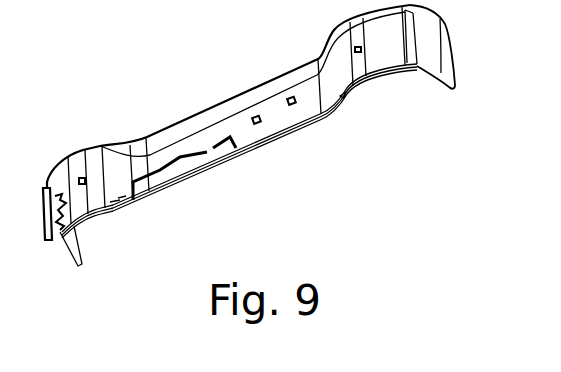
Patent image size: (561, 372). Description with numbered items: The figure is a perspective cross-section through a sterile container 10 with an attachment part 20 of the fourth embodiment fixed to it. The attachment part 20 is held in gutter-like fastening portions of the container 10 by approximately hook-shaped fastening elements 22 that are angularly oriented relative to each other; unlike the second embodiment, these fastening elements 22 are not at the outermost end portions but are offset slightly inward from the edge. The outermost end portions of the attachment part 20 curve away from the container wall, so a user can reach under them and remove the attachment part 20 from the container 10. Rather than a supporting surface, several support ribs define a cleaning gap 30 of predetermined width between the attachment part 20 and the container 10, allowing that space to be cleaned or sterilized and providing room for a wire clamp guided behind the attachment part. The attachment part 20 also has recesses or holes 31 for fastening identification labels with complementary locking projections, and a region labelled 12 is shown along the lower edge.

The container 10 is at (434, 65).
The sealing lip rail 12 is at (398, 68).
The attachment part 20 is at (125, 190).
The fastening elements 22 is at (400, 70).
The cleaning gap 30 is at (218, 166).
The holes 31 is at (290, 100).